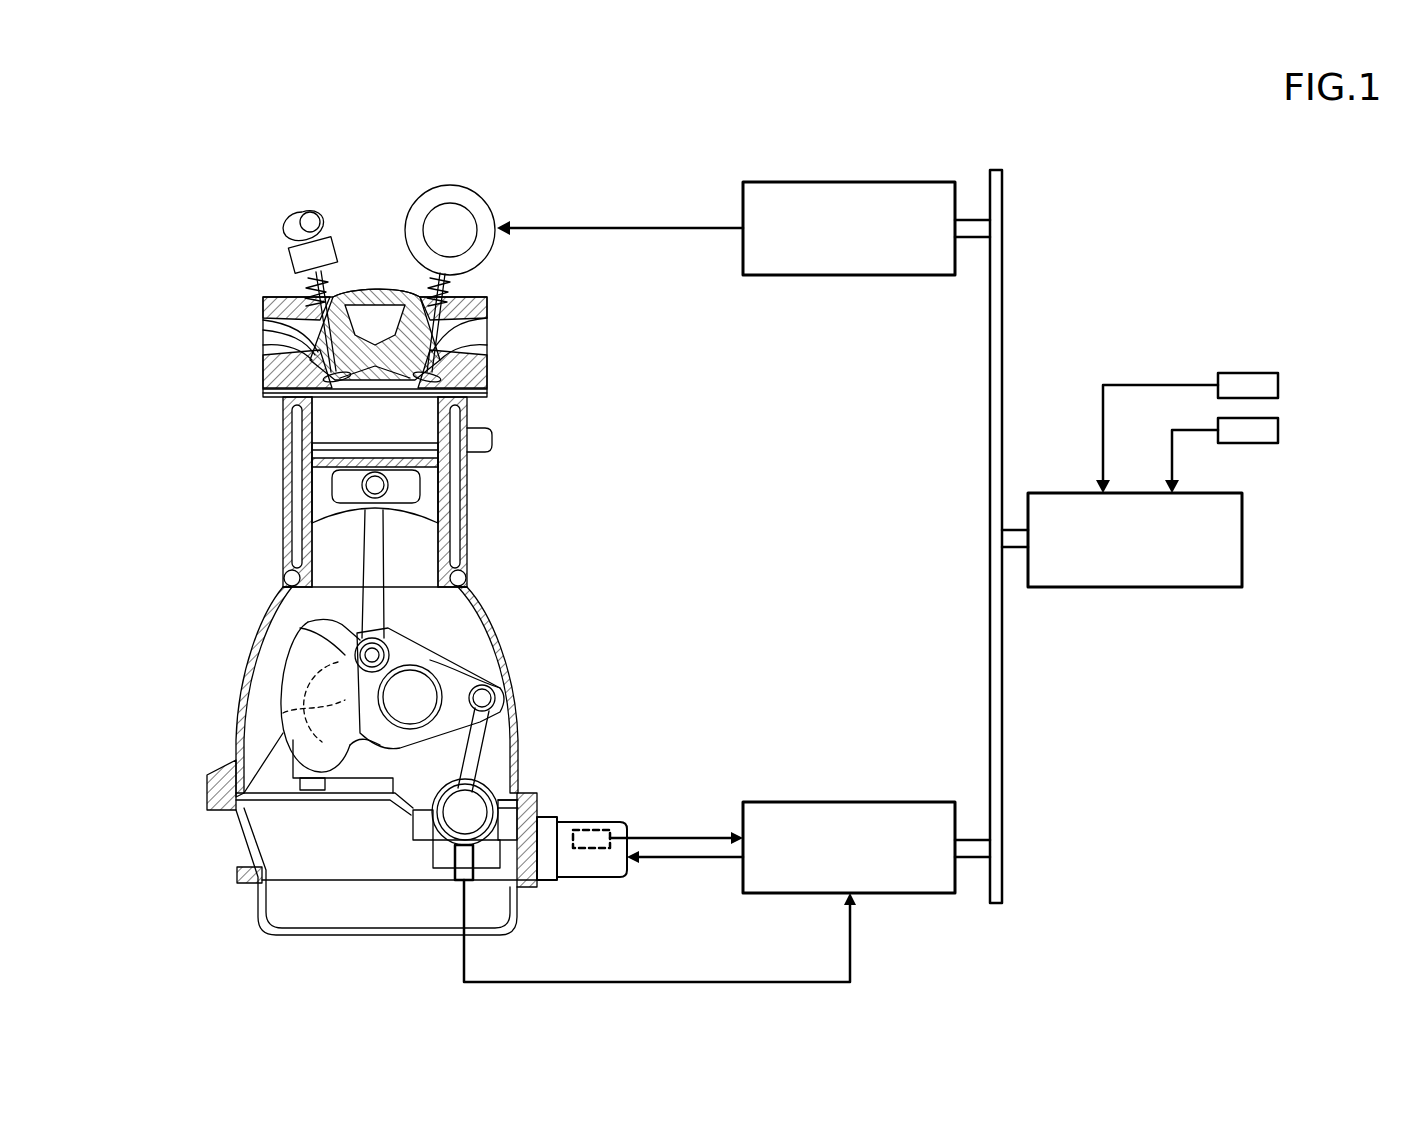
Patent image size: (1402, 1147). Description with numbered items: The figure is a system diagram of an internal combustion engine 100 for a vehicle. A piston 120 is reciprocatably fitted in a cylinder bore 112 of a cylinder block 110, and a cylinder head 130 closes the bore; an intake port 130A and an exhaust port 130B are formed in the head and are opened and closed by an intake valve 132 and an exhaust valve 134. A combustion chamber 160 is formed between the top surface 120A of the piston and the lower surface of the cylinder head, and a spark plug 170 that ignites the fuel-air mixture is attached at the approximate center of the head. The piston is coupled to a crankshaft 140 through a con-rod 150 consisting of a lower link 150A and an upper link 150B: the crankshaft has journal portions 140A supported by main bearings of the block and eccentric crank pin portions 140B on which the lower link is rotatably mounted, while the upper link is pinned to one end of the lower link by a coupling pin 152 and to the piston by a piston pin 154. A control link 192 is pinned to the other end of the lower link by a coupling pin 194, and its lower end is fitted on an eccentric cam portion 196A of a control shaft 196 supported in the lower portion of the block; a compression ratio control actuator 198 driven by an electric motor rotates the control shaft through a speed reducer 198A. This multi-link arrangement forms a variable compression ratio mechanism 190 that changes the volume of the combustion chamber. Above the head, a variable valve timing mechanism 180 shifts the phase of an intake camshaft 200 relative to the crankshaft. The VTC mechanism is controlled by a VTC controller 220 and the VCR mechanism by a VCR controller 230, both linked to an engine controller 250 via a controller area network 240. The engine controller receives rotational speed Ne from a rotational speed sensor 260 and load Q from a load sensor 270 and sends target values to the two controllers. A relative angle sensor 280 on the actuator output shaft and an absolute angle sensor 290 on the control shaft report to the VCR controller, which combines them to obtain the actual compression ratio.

The internal combustion engine 100 is at (216, 202).
The cylinder block 110 is at (498, 625).
The cylinder bore 112 is at (327, 552).
The piston 120 is at (427, 493).
The top surface of piston 120A is at (410, 440).
The cylinder head 130 is at (487, 376).
The intake port 130A is at (487, 329).
The exhaust port 130B is at (263, 352).
The intake valve 132 is at (487, 352).
The exhaust valve 134 is at (263, 329).
The crankshaft 140 is at (262, 684).
The journal portions 140A is at (283, 713).
The crank pin portions 140B is at (503, 679).
The connecting rod 150 is at (400, 552).
The lower link 150A is at (405, 640).
The upper link 150B is at (377, 613).
The coupling pin 152 is at (283, 648).
The piston pin 154 is at (337, 480).
The combustion chamber 160 is at (335, 420).
The spark plug 170 is at (268, 393).
The variable valve timing mechanism 180 is at (472, 180).
The variable compression ratio mechanism 190 is at (475, 655).
The control link 192 is at (483, 737).
The coupling pin 194 is at (496, 698).
The control shaft 196 is at (498, 800).
The eccentric cam portion 196A is at (535, 812).
The compression ratio control actuator 198 is at (593, 858).
The speed reducer 198A is at (476, 870).
The intake camshaft 200 is at (456, 236).
The VTC controller 220 is at (850, 182).
The VCR controller 230 is at (850, 802).
The controller area network 240 is at (1002, 700).
The engine controller 250 is at (1242, 512).
The rotational speed sensor 260 is at (1278, 383).
The load sensor 270 is at (1278, 428).
The relative angle sensor 280 is at (645, 833).
The absolute angle sensor 290 is at (460, 880).